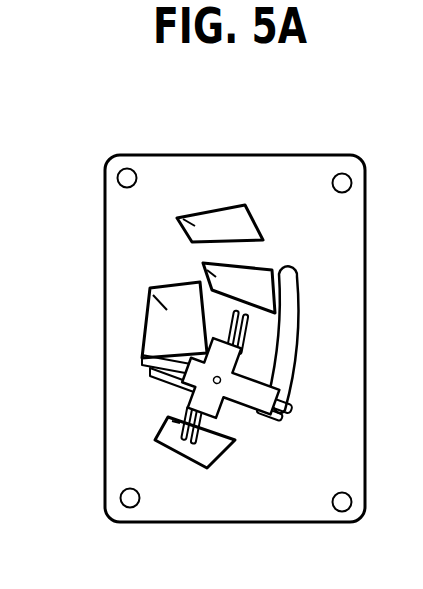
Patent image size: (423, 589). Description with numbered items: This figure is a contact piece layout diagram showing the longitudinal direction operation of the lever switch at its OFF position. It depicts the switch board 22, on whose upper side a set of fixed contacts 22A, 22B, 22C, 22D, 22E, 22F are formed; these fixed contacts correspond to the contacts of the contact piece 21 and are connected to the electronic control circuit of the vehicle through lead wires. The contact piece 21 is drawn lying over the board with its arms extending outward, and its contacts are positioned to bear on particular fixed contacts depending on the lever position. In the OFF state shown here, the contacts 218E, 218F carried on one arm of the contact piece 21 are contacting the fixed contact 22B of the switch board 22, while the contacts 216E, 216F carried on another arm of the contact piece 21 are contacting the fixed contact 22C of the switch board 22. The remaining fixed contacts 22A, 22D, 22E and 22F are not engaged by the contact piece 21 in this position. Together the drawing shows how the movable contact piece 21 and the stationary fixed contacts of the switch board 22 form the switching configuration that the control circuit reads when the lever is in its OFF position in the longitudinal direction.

The switch board 22 is at (315, 138).
The fixed contact 22A is at (297, 365).
The fixed contact 22B is at (167, 310).
The fixed contact 22C is at (166, 423).
The fixed contact 22D is at (204, 266).
The fixed contact 22E is at (188, 386).
The fixed contact 22F is at (176, 218).
The contact piece 21 is at (266, 347).
The contact 218E is at (166, 361).
The contact 218F is at (166, 349).
The contact 216E is at (210, 450).
The contact 216F is at (185, 441).